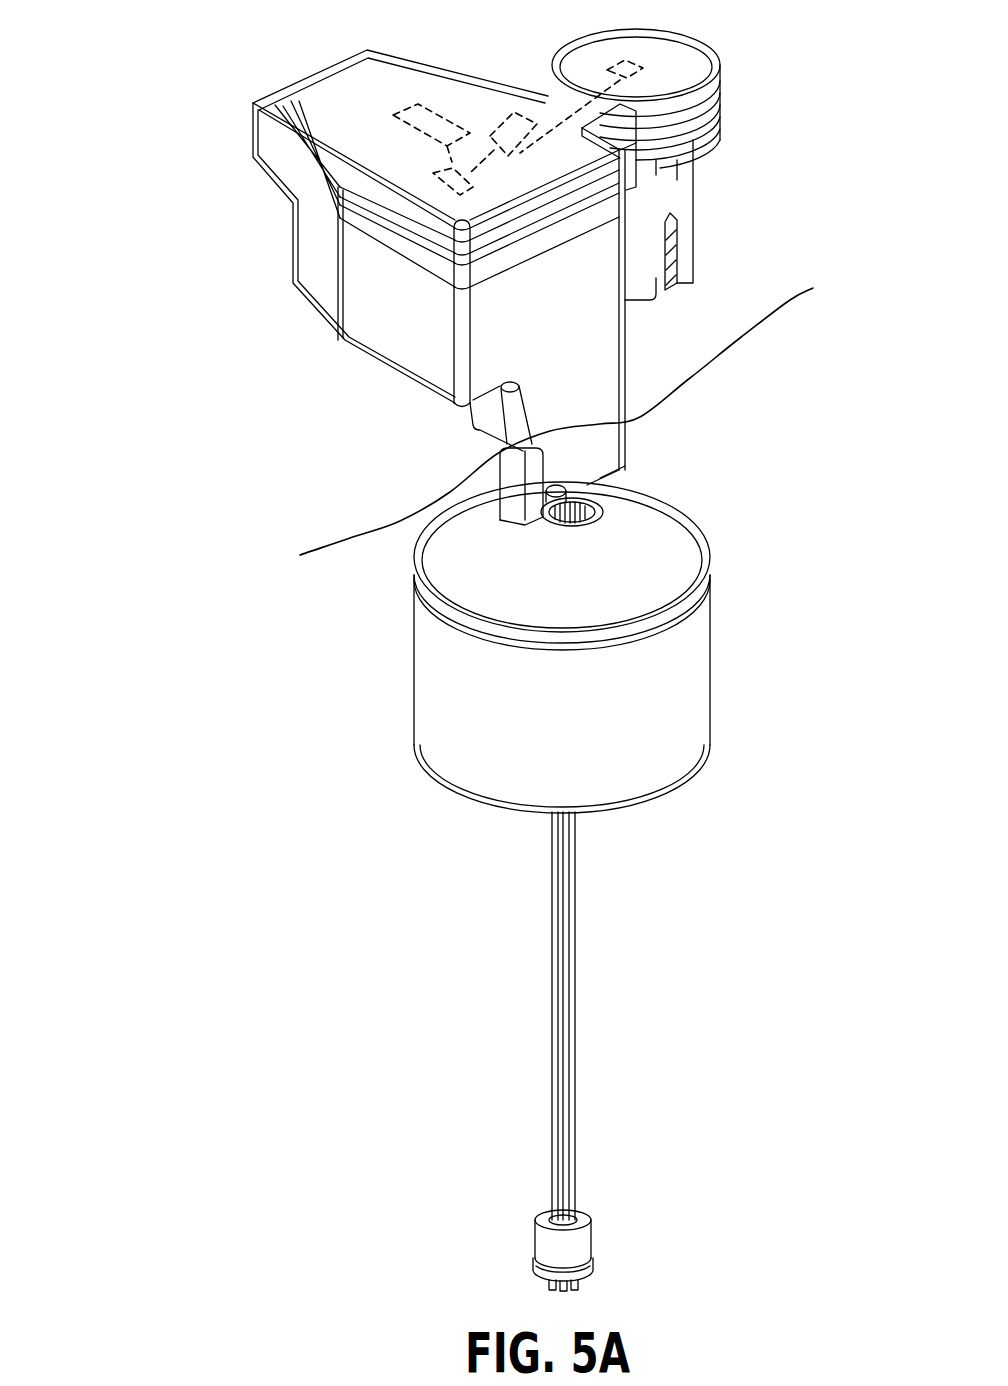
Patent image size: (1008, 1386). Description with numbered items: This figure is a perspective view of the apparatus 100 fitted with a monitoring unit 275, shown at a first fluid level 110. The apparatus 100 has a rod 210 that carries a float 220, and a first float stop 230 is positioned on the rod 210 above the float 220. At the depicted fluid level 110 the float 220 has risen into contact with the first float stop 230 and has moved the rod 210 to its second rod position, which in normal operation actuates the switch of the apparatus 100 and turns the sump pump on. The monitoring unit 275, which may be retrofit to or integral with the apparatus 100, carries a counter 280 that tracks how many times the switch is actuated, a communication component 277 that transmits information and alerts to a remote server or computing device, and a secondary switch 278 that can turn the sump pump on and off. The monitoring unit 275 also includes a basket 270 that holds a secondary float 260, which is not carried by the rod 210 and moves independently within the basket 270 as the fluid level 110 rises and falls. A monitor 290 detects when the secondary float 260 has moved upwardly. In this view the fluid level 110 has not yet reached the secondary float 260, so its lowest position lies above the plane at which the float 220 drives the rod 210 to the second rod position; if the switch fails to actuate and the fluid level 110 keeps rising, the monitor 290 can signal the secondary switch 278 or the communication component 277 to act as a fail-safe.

The apparatus 100 is at (213, 508).
The fluid level 110 is at (343, 548).
The rod 210 is at (556, 1112).
The float 220 is at (467, 752).
The first float stop 230 is at (588, 485).
The secondary float 260 is at (663, 265).
The basket 270 is at (673, 195).
The monitoring unit 275 is at (367, 118).
The communication component 277 is at (487, 137).
The secondary switch 278 is at (443, 123).
The counter 280 is at (445, 184).
The monitor 290 is at (637, 68).